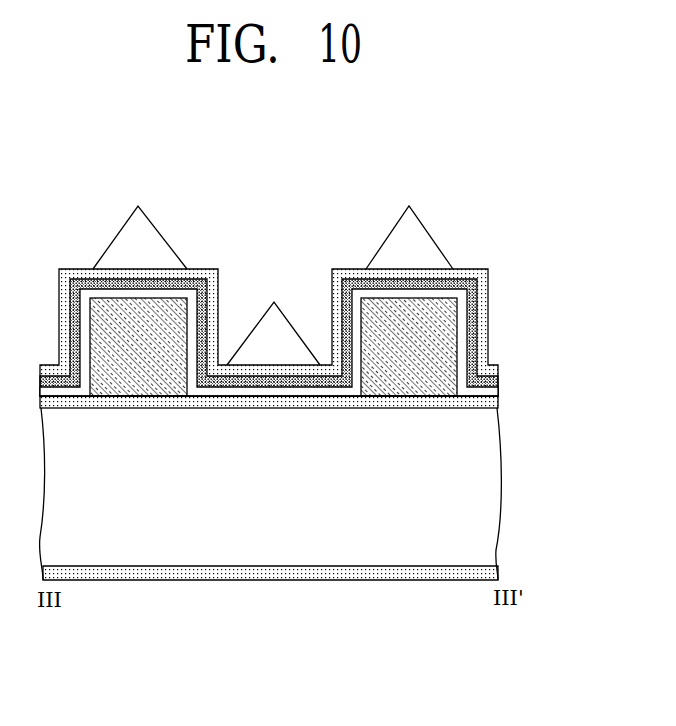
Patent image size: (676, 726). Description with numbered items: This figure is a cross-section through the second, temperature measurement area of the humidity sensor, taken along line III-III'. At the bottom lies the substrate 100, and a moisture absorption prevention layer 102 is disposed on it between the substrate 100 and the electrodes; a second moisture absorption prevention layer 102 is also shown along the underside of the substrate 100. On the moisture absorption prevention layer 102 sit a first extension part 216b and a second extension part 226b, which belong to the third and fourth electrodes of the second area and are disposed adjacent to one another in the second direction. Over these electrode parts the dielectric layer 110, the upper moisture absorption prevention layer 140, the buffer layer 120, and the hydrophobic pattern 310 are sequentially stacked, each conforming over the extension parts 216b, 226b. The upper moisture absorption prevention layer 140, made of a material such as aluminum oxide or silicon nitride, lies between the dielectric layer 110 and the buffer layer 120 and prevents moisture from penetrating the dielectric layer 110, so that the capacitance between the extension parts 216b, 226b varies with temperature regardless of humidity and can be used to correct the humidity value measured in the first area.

The substrate 100 is at (490, 488).
The moisture absorption prevention layer 102 is at (497, 402).
The dielectric layer 110 is at (497, 390).
The buffer layer 120 is at (497, 370).
The upper moisture absorption prevention layer 140 is at (497, 380).
The first extension part 216b is at (138, 380).
The second extension part 226b is at (412, 380).
The hydrophobic pattern 310 is at (419, 237).